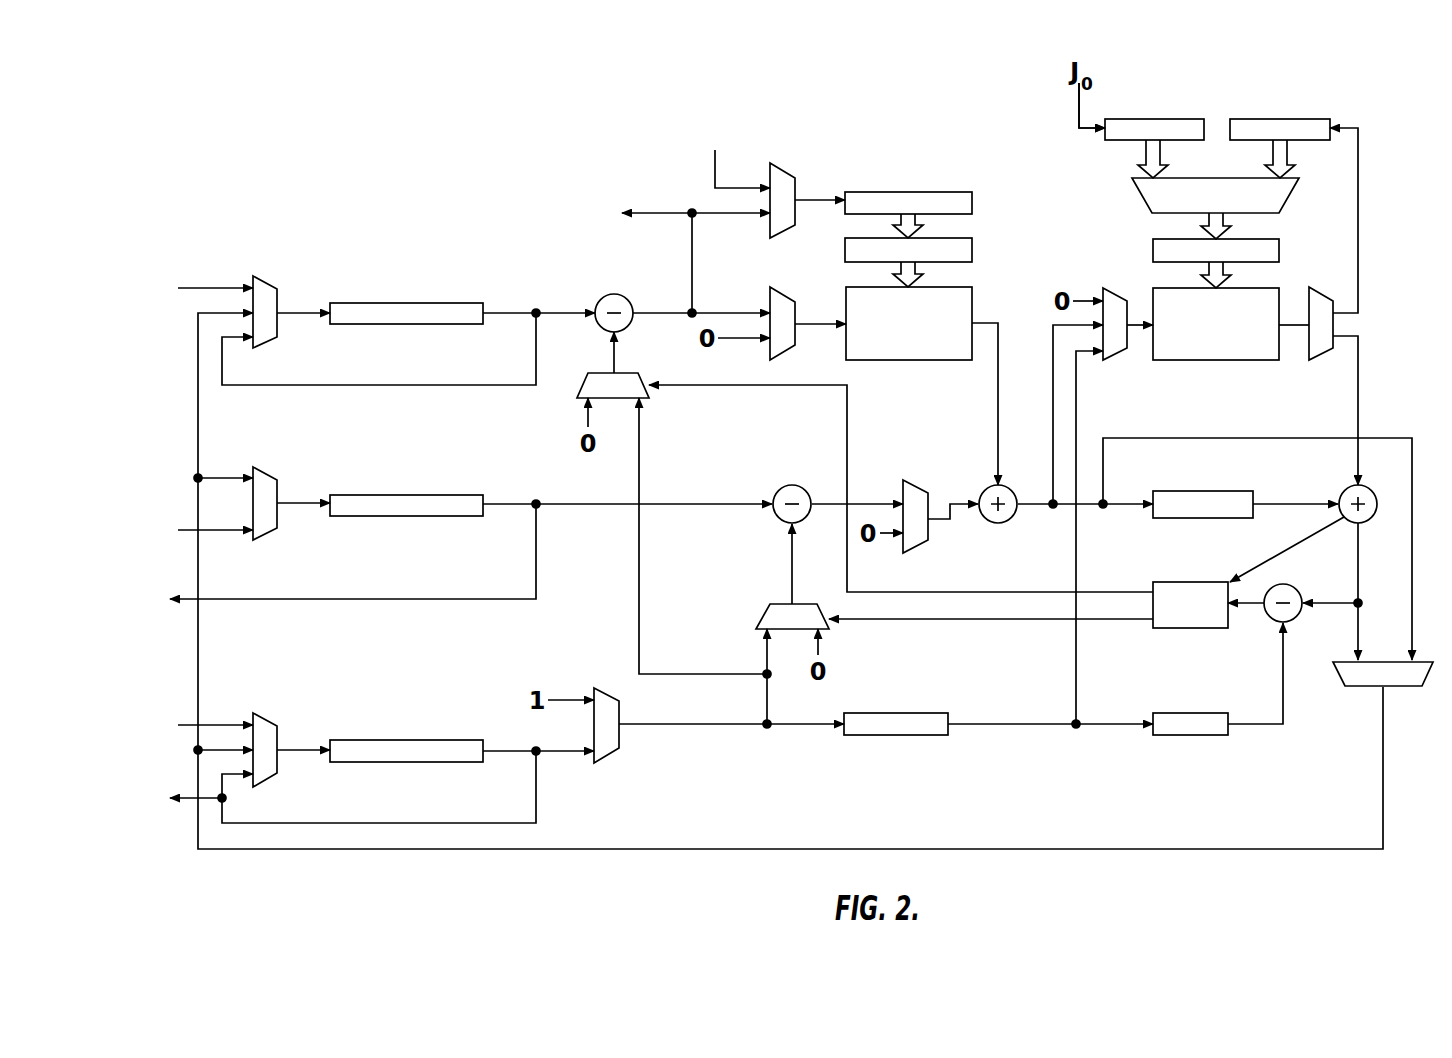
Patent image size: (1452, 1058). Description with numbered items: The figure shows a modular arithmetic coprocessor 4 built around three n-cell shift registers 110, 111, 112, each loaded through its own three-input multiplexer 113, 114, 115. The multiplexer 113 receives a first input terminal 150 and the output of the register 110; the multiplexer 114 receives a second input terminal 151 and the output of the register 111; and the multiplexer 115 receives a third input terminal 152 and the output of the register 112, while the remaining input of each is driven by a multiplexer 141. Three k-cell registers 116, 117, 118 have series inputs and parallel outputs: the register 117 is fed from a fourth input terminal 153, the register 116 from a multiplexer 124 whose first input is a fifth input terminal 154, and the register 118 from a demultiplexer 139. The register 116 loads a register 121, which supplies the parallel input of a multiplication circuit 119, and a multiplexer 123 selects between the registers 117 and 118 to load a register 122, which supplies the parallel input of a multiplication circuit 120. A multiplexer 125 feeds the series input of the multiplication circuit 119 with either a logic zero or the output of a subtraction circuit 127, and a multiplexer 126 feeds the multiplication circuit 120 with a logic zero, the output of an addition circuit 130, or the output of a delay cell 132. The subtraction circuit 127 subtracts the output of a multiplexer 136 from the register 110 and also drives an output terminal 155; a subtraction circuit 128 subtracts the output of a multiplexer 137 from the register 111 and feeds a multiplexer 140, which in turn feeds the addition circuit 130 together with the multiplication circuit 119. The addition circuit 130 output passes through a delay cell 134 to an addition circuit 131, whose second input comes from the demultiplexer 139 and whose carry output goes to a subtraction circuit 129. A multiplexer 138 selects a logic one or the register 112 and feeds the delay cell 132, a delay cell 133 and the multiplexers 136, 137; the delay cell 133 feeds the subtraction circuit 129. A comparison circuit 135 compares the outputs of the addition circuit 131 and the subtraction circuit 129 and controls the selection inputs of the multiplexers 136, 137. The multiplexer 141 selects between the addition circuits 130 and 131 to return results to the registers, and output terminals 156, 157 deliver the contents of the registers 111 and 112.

The coprocessor 4 is at (512, 182).
The shift register 110 is at (432, 302).
The shift register 111 is at (380, 516).
The shift register 112 is at (442, 740).
The multiplexer 113 is at (262, 276).
The multiplexer 114 is at (262, 540).
The multiplexer 115 is at (268, 713).
The k-cell register 116 is at (973, 200).
The k-cell register 117 is at (1143, 119).
The k-cell register 118 is at (1268, 119).
The multiplication circuit 119 is at (910, 360).
The multiplication circuit 120 is at (1207, 360).
The register 121 is at (973, 250).
The register 122 is at (1279, 250).
The multiplexer 123 is at (1300, 187).
The multiplexer 124 is at (785, 163).
The multiplexer 125 is at (787, 288).
The multiplexer 126 is at (1118, 288).
The subtraction circuit 127 is at (608, 295).
The subtraction circuit 128 is at (793, 485).
The subtraction circuit 129 is at (1287, 584).
The addition circuit 130 is at (1003, 523).
The addition circuit 131 is at (1376, 512).
The delay cell 132 is at (898, 735).
The delay cell 133 is at (1196, 735).
The delay cell 134 is at (1190, 518).
The comparison circuit 135 is at (1190, 628).
The multiplexer 136 is at (578, 398).
The multiplexer 137 is at (767, 613).
The multiplexer 138 is at (602, 763).
The demultiplexer 139 is at (1323, 360).
The multiplexer 140 is at (918, 545).
The multiplexer 141 is at (1423, 676).
The first input terminal 150 is at (200, 287).
The second input terminal 151 is at (217, 532).
The third input terminal 152 is at (187, 723).
The fourth input terminal 153 is at (1079, 110).
The fifth input terminal 154 is at (715, 158).
The output terminal 155 is at (652, 210).
The output terminal 156 is at (193, 603).
The output terminal 157 is at (190, 805).